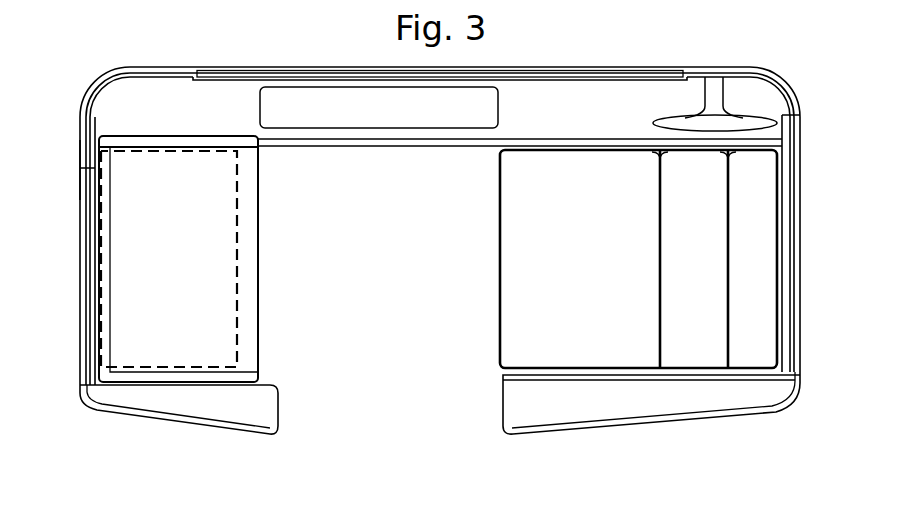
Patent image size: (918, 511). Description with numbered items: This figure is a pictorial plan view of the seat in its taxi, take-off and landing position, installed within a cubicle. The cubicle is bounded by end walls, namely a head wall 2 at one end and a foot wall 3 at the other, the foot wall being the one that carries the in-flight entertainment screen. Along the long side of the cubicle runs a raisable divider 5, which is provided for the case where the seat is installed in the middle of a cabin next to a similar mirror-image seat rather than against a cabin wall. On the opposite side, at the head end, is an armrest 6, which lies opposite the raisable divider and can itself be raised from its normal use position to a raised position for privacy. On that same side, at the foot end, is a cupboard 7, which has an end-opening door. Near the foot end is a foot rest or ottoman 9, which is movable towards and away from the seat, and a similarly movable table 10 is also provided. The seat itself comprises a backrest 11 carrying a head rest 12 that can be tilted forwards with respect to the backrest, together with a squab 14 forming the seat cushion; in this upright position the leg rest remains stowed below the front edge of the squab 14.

The head wall 2 is at (800, 125).
The foot wall 3 is at (82, 140).
The raisable divider 5 is at (584, 72).
The armrest 6 is at (515, 406).
The cupboard 7 is at (263, 410).
The foot rest or ottoman 9 is at (227, 224).
The table 10 is at (250, 284).
The backrest 11 is at (693, 356).
The head rest 12 is at (755, 356).
The squab 14 is at (509, 273).